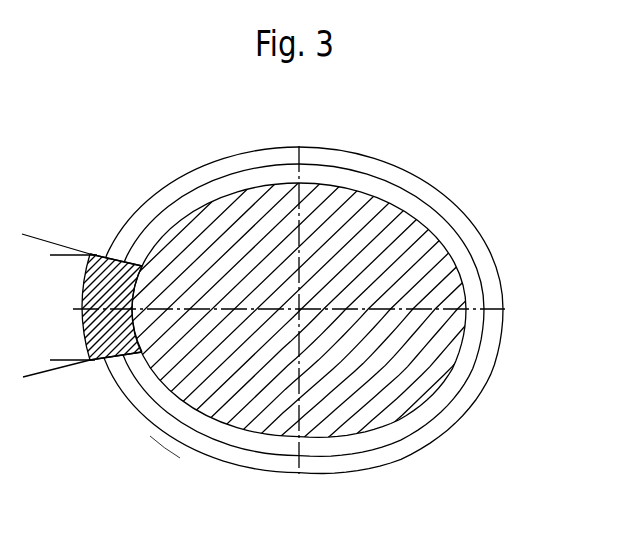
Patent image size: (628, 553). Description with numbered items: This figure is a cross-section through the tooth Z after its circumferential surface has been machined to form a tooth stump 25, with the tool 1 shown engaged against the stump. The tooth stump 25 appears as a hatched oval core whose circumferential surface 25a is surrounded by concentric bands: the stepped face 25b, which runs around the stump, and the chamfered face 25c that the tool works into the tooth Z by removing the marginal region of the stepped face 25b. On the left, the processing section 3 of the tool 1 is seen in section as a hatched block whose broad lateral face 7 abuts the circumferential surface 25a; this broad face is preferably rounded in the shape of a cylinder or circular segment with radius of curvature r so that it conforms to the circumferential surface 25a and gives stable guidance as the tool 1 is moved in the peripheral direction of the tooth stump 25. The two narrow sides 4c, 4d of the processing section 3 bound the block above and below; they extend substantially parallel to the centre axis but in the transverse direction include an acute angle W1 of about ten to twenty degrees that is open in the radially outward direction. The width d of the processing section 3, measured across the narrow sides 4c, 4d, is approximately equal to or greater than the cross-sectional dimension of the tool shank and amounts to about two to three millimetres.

The stepped face 25b is at (166, 168).
The chamfered face 25c is at (368, 162).
The circumferential surface 25a is at (267, 180).
The tooth stump 25 is at (397, 386).
The tool 1 is at (157, 317).
The processing section 3 is at (90, 374).
The narrow side 4c is at (113, 252).
The narrow side 4d is at (118, 360).
The broad lateral face 7 is at (146, 293).
The acute angle W1 is at (26, 237).
The width of the processing section d is at (57, 256).
The tooth Z is at (163, 449).